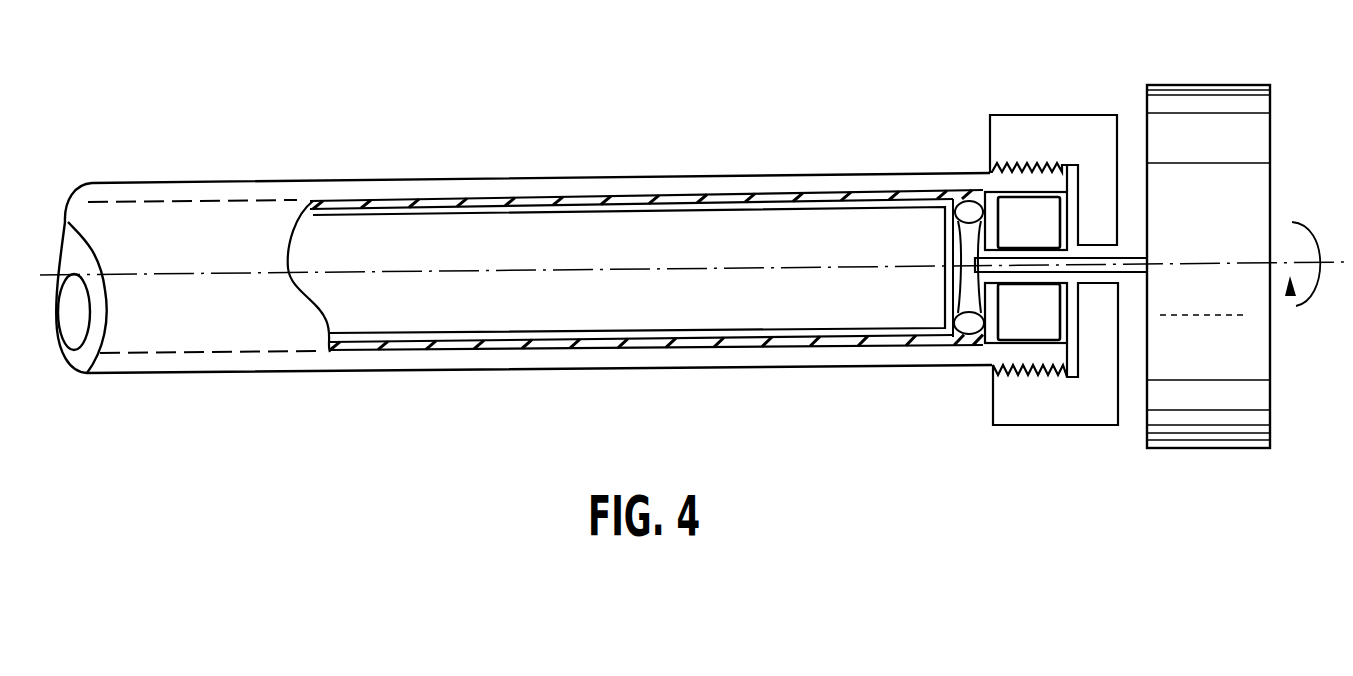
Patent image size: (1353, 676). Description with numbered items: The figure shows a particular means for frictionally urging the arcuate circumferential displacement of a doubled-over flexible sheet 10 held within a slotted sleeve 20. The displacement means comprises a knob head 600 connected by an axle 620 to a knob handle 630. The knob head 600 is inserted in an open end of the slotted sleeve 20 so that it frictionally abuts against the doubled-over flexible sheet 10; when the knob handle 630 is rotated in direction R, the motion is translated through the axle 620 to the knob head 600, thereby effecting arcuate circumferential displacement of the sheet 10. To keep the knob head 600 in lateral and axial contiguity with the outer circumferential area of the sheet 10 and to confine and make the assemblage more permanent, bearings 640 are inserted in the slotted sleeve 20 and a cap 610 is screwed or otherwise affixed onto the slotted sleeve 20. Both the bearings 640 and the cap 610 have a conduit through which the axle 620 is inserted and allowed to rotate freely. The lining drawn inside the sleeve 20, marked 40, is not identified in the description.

The doubled-over flexible sheet 10 is at (638, 342).
The slotted sleeve 20 is at (628, 177).
The liner 40 is at (495, 333).
The knob head 600 is at (968, 203).
The cap 610 is at (1085, 147).
The axle 620 is at (1137, 258).
The knob handle 630 is at (1262, 85).
The bearings 640 is at (1048, 232).